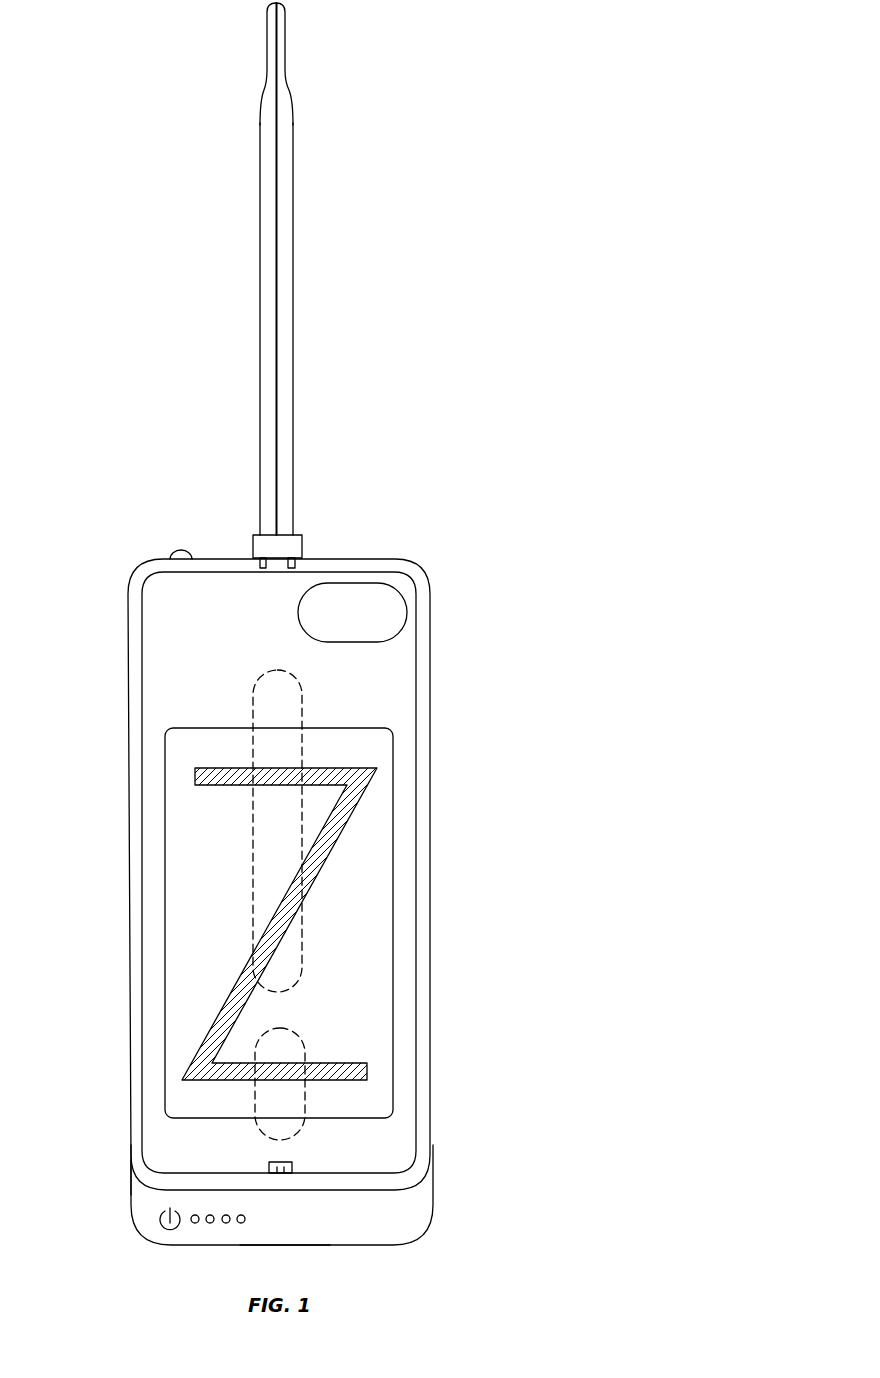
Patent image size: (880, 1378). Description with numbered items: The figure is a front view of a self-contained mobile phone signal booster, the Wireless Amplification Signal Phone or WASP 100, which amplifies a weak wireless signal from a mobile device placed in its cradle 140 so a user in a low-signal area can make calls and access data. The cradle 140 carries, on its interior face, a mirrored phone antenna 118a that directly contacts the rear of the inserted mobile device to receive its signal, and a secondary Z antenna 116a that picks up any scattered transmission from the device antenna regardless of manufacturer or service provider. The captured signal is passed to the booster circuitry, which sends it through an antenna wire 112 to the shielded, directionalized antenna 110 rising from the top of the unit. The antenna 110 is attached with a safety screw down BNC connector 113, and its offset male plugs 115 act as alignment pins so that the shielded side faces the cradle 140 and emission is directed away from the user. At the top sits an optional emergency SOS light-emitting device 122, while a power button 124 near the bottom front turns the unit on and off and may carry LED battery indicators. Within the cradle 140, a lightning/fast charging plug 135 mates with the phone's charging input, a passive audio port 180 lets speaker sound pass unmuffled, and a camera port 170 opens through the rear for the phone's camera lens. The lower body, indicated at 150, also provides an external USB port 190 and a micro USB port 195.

The Wireless Amplification Signal Phone (WASP) 100 is at (497, 445).
The antenna 110 is at (268, 47).
The antenna wire 112 is at (278, 266).
The safety screw down BNC connector 113 is at (303, 548).
The offset male plugs 115 is at (290, 560).
The secondary antenna 116a is at (343, 818).
The mirrored phone antenna 118a is at (265, 892).
The emergency SOS light-emitting device 122 is at (176, 553).
The power button 124 is at (156, 1228).
The lightning/fast charging plug 135 is at (268, 1166).
The cradle 140 is at (127, 712).
The case bottom portion 150 is at (130, 1192).
The camera port 170 is at (405, 610).
The passive audio port 180 is at (282, 1191).
The external USB port 190 is at (433, 1188).
The micro USB port 195 is at (298, 1246).